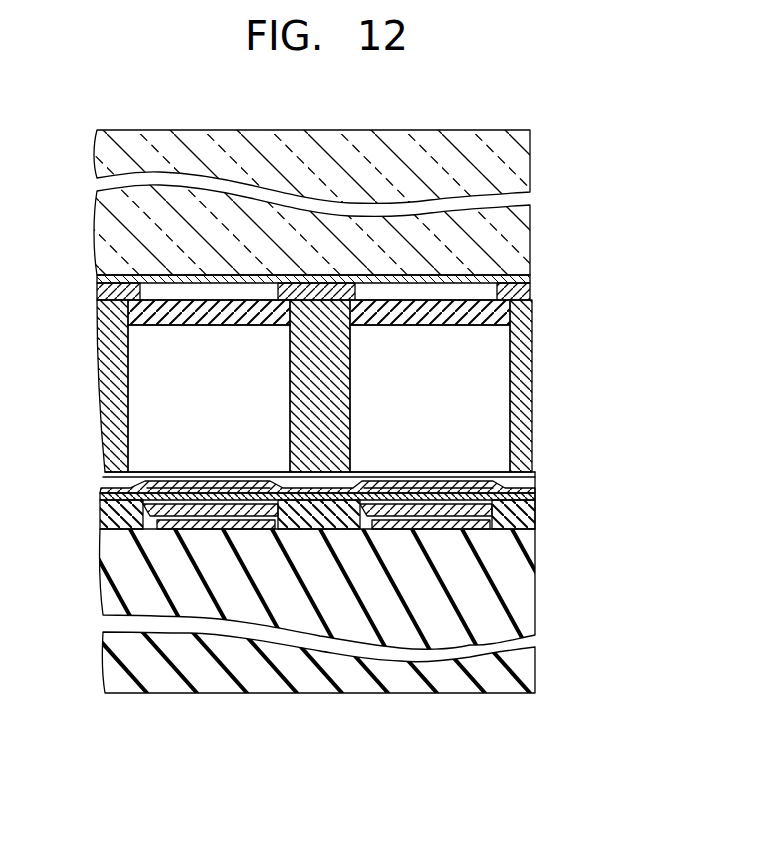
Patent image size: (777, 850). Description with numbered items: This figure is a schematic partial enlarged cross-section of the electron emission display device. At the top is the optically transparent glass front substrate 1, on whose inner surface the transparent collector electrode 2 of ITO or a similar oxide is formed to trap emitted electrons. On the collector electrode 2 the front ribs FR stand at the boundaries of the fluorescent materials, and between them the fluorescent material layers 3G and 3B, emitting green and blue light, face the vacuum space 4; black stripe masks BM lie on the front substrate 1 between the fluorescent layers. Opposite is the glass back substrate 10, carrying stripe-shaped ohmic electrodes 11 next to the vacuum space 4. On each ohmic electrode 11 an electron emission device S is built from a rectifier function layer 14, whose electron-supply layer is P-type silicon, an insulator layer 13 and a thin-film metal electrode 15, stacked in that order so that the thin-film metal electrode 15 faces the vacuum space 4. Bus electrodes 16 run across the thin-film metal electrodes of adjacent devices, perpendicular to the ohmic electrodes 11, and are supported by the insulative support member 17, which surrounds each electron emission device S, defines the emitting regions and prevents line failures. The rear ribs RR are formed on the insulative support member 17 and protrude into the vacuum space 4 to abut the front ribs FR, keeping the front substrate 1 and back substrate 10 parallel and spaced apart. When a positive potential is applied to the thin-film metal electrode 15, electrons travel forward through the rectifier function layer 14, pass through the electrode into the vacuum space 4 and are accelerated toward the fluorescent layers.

The front substrate 1 is at (497, 160).
The transparent collector electrode 2 is at (532, 279).
The black stripe mask BM is at (532, 292).
The front rib FR is at (522, 370).
The green fluorescent material layer 3G is at (186, 326).
The blue fluorescent material layer 3B is at (424, 326).
The vacuum space 4 is at (435, 413).
The rear rib RR is at (525, 474).
The bus electrode 16 is at (108, 490).
The thin-film metal electrode 15 is at (207, 488).
The insulator layer 13 is at (102, 500).
The rectifier function layer 14 is at (100, 532).
The ohmic electrode 11 is at (213, 492).
The insulative support member 17 is at (530, 512).
The back substrate 10 is at (518, 665).
The electron emission device S is at (450, 538).